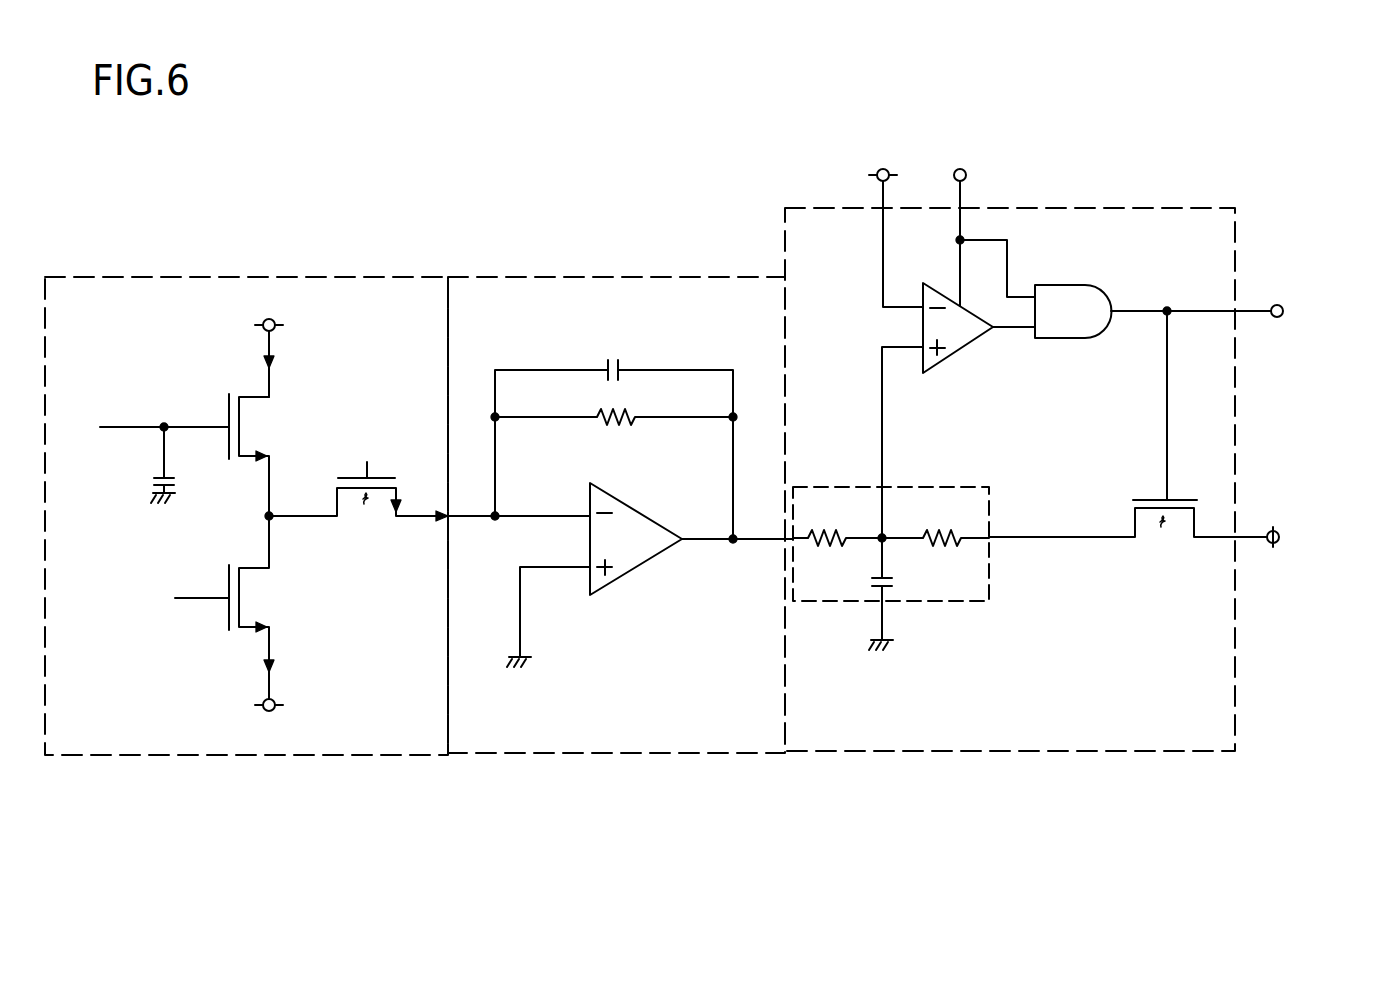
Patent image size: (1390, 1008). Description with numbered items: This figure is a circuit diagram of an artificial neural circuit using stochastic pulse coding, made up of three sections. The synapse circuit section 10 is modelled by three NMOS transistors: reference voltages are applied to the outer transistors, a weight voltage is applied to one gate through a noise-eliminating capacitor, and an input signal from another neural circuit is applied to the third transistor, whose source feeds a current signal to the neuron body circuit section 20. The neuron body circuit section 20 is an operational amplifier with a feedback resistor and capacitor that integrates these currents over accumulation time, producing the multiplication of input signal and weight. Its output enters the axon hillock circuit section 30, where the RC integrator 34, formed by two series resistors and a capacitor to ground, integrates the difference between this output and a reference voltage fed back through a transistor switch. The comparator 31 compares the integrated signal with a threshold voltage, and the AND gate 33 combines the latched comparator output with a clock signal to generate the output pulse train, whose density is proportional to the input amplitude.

The synapse circuit section 10 is at (238, 277).
The neuron body circuit section 20 is at (618, 277).
The axon hillock circuit section 30 is at (1040, 208).
The comparator 31 is at (960, 344).
The AND gate 33 is at (1068, 285).
The RC integrator 34 is at (990, 526).